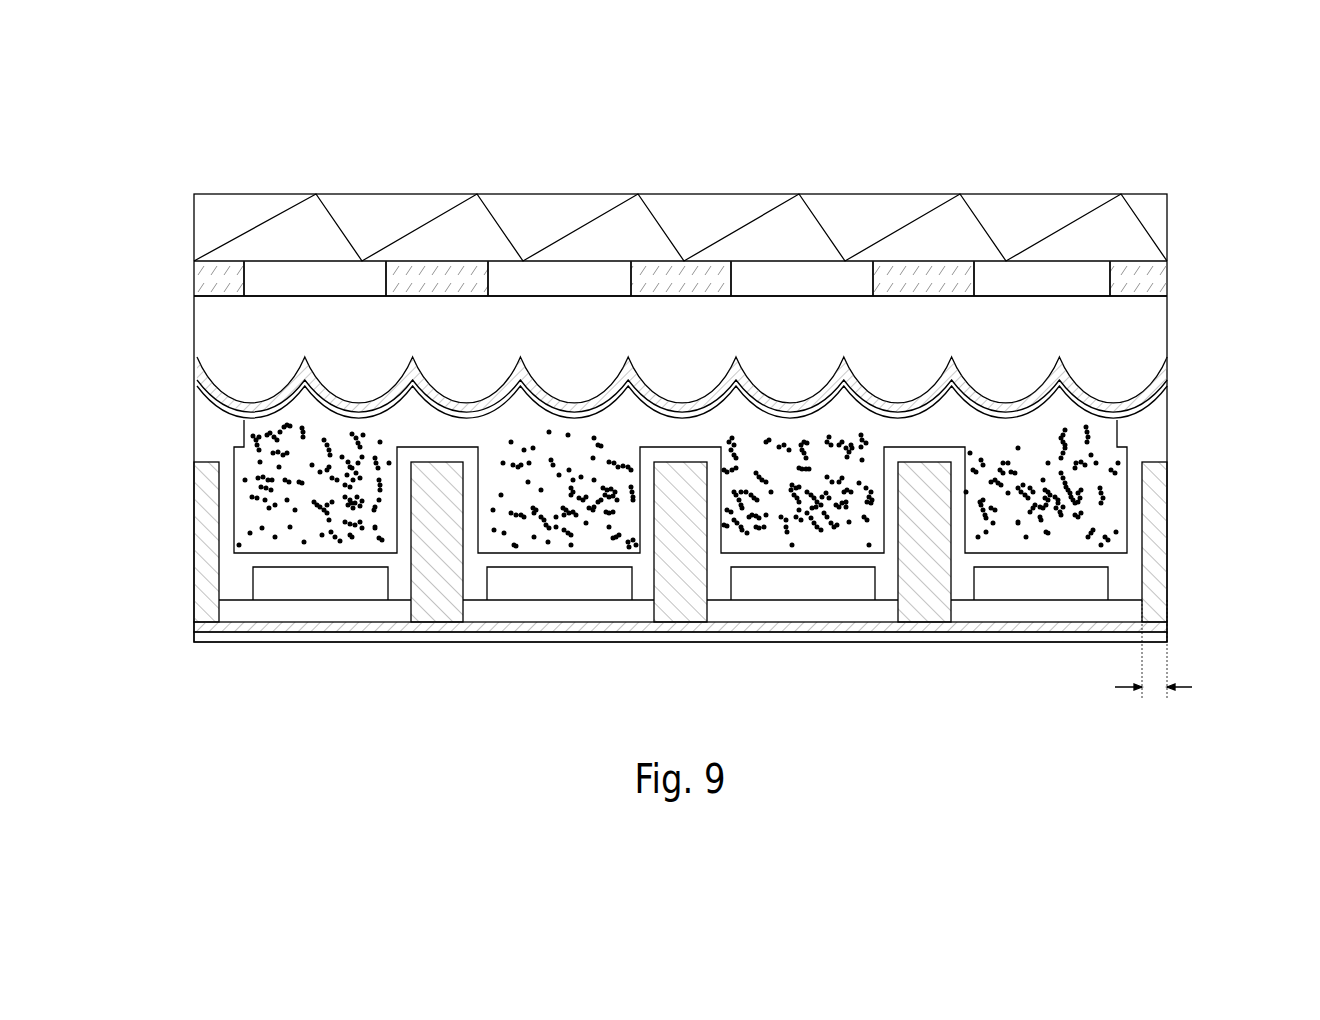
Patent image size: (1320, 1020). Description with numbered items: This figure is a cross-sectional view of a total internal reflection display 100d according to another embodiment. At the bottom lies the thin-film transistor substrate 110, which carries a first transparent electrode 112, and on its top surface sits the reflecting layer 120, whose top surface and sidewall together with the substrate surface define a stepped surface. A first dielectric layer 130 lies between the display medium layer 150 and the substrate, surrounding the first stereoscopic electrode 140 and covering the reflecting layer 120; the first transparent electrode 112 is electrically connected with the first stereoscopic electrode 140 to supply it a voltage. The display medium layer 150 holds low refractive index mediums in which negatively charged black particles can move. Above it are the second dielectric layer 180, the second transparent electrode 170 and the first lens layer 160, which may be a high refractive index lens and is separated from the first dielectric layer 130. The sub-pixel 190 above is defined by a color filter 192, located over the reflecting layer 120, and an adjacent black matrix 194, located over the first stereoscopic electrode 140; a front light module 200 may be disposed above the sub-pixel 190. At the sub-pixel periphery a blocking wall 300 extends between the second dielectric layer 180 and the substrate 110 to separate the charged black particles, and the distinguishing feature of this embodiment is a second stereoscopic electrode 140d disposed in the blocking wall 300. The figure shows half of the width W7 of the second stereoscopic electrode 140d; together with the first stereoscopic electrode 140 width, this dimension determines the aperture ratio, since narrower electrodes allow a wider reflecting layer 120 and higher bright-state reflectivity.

The total internal reflection display 100d is at (185, 93).
The thin-film transistor substrate 110 is at (1167, 637).
The first transparent electrode 112 is at (1167, 626).
The reflecting layer 120 is at (1043, 598).
The first dielectric layer 130 is at (1120, 595).
The first stereoscopic electrode 140 is at (925, 610).
The second stereoscopic electrode 140d is at (1158, 502).
The display medium layer 150 is at (1140, 448).
The first lens layer 160 is at (1162, 337).
The second transparent electrode 170 is at (1162, 372).
The second dielectric layer 180 is at (1160, 396).
The sub-pixel 190 is at (1080, 146).
The color filter 192 is at (1028, 268).
The black matrix 194 is at (940, 270).
The front light module 200 is at (1146, 202).
The blocking wall 300 is at (1158, 427).
The width of the second stereoscopic electrode W7 is at (1153, 661).